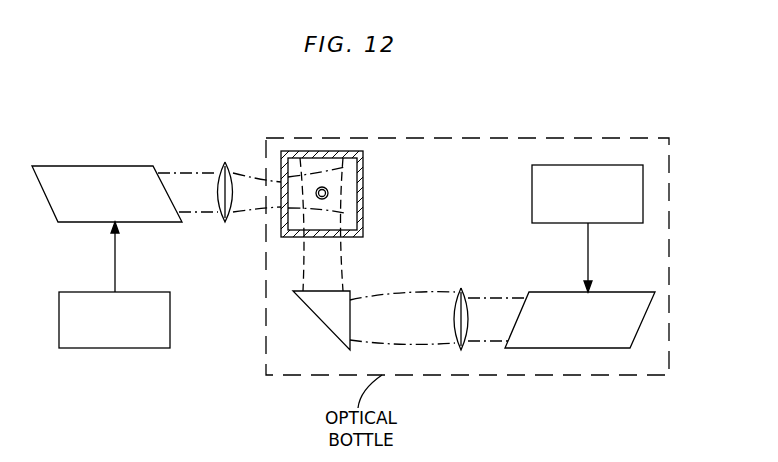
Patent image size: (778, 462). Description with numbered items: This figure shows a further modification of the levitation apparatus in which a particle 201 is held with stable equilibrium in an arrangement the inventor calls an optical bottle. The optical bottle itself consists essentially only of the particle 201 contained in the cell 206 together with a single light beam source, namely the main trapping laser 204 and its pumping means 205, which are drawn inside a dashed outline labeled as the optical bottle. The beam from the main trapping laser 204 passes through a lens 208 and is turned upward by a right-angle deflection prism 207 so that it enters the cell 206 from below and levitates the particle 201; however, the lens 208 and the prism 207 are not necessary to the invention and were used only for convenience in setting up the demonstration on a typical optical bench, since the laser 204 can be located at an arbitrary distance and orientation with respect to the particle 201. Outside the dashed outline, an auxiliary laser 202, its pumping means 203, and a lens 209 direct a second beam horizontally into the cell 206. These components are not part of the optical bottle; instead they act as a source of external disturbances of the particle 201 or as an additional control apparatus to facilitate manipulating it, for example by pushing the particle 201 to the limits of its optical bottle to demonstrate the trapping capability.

The particle 201 is at (328, 190).
The auxiliary laser 202 is at (98, 166).
The pumping means 203 is at (104, 348).
The main trapping laser 204 is at (575, 340).
The pumping means 205 is at (532, 180).
The cell 206 is at (363, 227).
The right-angle deflection prism 207 is at (318, 319).
The lens 208 is at (457, 342).
The lens 209 is at (227, 162).